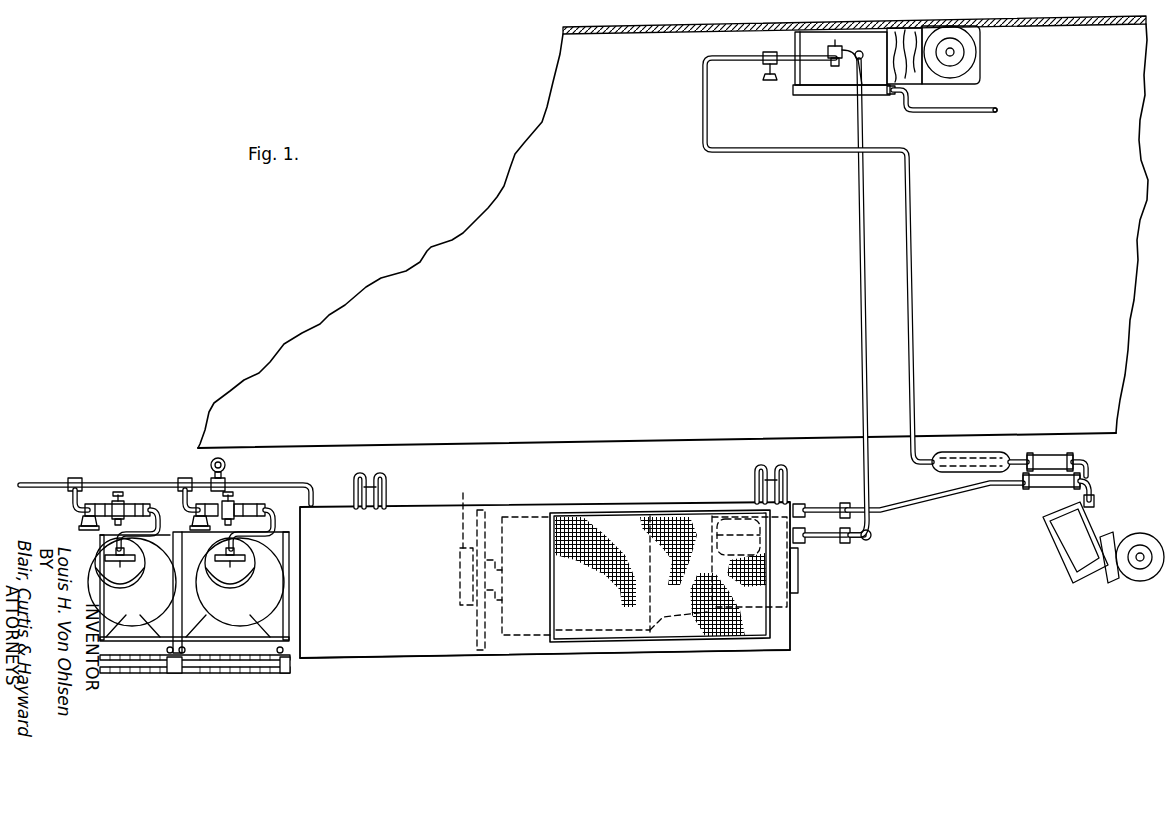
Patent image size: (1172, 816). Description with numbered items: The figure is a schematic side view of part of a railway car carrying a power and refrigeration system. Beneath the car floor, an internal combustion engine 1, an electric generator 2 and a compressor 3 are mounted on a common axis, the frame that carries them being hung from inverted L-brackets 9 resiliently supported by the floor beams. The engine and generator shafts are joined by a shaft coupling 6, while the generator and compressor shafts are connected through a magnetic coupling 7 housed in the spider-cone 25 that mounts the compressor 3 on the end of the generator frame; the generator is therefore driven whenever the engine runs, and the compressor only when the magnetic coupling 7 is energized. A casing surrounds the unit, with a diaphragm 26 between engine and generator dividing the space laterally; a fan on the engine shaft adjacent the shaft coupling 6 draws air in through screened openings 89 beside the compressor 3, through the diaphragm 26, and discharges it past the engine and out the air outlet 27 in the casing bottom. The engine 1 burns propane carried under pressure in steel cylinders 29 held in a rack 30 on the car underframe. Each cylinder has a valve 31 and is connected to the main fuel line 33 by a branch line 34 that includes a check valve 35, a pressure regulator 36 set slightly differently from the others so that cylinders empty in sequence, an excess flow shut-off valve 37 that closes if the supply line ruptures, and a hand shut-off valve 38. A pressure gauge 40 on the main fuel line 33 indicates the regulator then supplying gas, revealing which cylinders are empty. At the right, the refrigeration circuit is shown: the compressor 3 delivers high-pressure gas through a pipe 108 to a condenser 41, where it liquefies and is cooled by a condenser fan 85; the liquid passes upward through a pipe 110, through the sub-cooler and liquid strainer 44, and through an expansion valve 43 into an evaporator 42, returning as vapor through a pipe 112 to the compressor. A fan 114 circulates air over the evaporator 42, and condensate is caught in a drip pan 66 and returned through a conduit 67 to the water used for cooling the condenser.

The internal combustion engine 1 is at (359, 665).
The electric generator 2 is at (582, 640).
The compressor 3 is at (767, 640).
The shaft coupling 6 is at (479, 541).
The magnetic coupling 7 is at (682, 640).
The inverted L-brackets 9 is at (385, 495).
The spider-cone 25 is at (662, 637).
The diaphragm 26 is at (492, 650).
The air outlet 27 is at (423, 658).
The steel cylinders 29 is at (90, 550).
The rack 30 is at (174, 678).
The valve 31 is at (220, 562).
The main fuel line 33 is at (273, 481).
The branch line 34 is at (265, 513).
The check valve 35 is at (263, 502).
The pressure regulator 36 is at (231, 503).
The excess flow shut-off valve 37 is at (215, 505).
The hand shut-off valve 38 is at (198, 482).
The pressure gauge 40 is at (226, 462).
The condenser 41 is at (1072, 540).
The evaporator 42 is at (873, 82).
The expansion valve 43 is at (832, 66).
The liquid strainer 44 is at (972, 453).
The drip pan 66 is at (833, 95).
The conduit 67 is at (957, 112).
The condenser fan 85 is at (1135, 533).
The screened openings 89 is at (710, 633).
The pipe 108 is at (908, 507).
The pipe 110 is at (915, 402).
The pipe 112 is at (861, 210).
The fan 114 is at (978, 65).